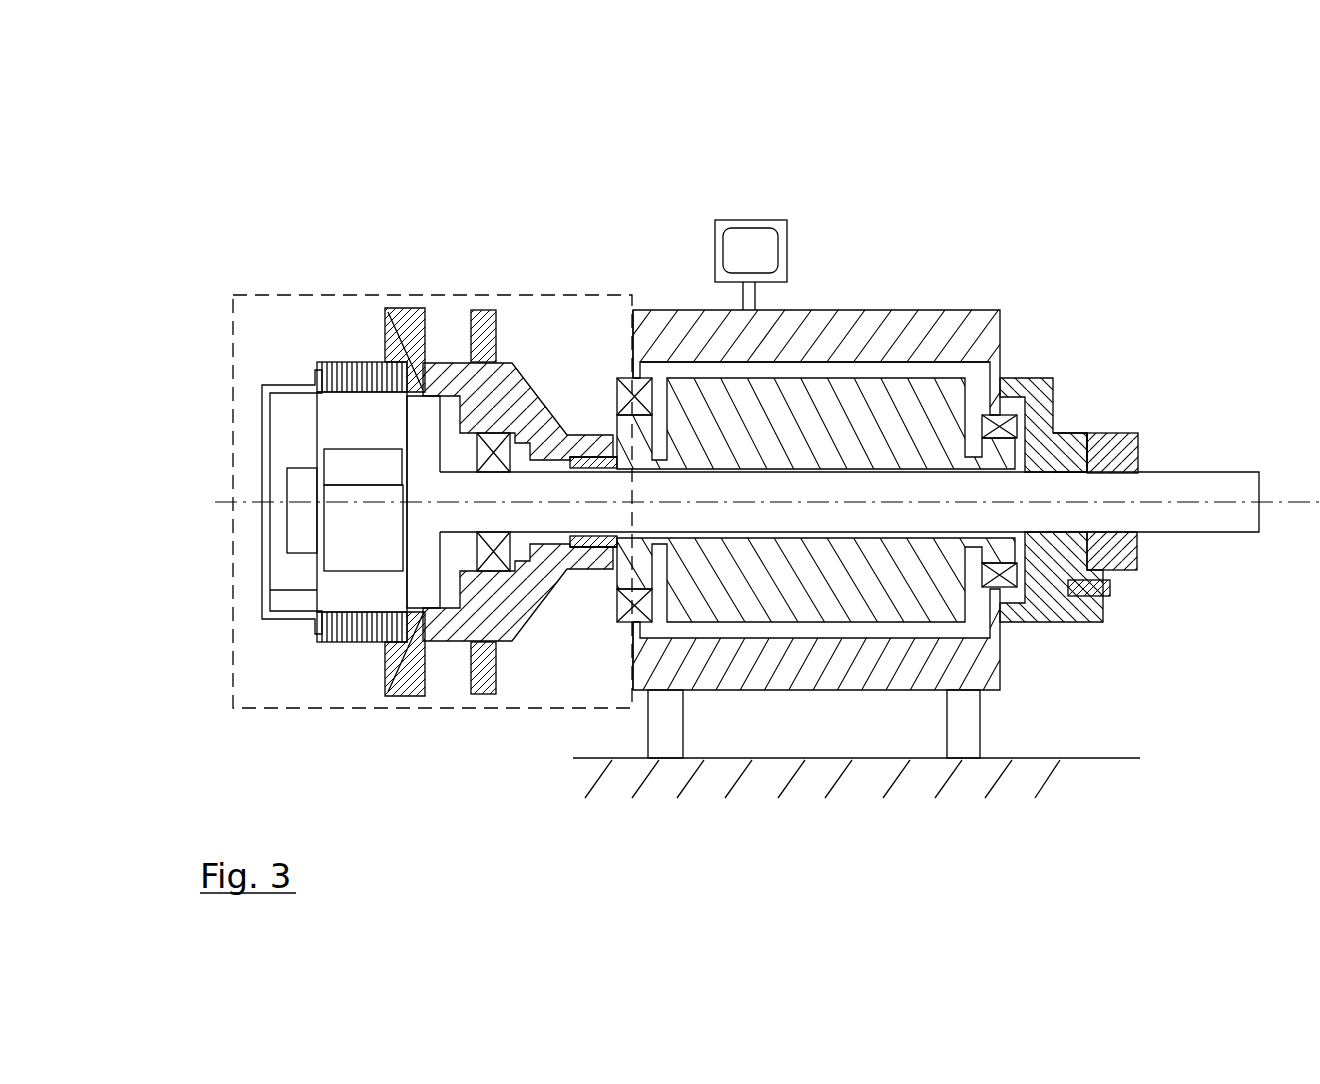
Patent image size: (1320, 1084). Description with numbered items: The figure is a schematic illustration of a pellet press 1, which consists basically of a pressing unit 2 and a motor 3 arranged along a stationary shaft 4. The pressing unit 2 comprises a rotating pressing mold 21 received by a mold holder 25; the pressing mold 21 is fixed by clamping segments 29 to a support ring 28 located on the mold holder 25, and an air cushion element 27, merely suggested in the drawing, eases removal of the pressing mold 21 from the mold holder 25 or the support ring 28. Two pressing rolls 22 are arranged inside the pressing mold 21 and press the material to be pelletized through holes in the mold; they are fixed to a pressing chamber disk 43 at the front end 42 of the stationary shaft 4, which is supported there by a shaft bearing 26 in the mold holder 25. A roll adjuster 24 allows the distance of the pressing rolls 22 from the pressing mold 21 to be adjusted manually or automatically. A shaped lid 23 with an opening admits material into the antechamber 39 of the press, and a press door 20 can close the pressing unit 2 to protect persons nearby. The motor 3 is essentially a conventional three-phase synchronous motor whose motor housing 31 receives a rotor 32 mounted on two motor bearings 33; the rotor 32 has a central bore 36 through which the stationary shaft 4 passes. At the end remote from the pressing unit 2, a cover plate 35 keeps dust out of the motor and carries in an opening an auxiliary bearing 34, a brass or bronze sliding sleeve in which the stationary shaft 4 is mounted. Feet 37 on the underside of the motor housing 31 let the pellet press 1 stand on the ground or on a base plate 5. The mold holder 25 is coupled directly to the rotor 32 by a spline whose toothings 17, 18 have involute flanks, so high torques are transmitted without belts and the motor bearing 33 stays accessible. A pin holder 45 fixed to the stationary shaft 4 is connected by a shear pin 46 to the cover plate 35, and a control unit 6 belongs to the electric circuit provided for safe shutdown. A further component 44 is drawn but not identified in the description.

The pellet press 1 is at (845, 258).
The pressing unit 2 is at (450, 270).
The motor 3 is at (922, 303).
The stationary shaft 4 is at (995, 655).
The base plate 5 is at (860, 772).
The control unit 6 is at (748, 252).
The spline toothing 17 is at (583, 457).
The spline toothing 18 is at (565, 552).
The press door 20 is at (265, 295).
The pressing mold 21 is at (347, 358).
The pressing rolls 22 is at (343, 467).
The shaped lid 23 is at (262, 393).
The roll adjuster 24 is at (302, 487).
The mold holder 25 is at (518, 438).
The shaft bearing 26 is at (586, 457).
The air cushion element 27 is at (483, 328).
The support ring 28 is at (387, 334).
The clamping segments 29 is at (345, 370).
The motor housing 31 is at (945, 335).
The rotor 32 is at (945, 400).
The motor bearings 33 is at (645, 395).
The auxiliary bearing 34 is at (1083, 435).
The cover plate 35 is at (1063, 465).
The central bore 36 is at (1003, 378).
The feet 37 is at (672, 723).
The antechamber 39 is at (297, 592).
The front end 42 is at (490, 512).
The pressing chamber disk 43 is at (413, 608).
The shaft 44 is at (1065, 518).
The pin holder 45 is at (1138, 453).
The shear pin 46 is at (1110, 588).